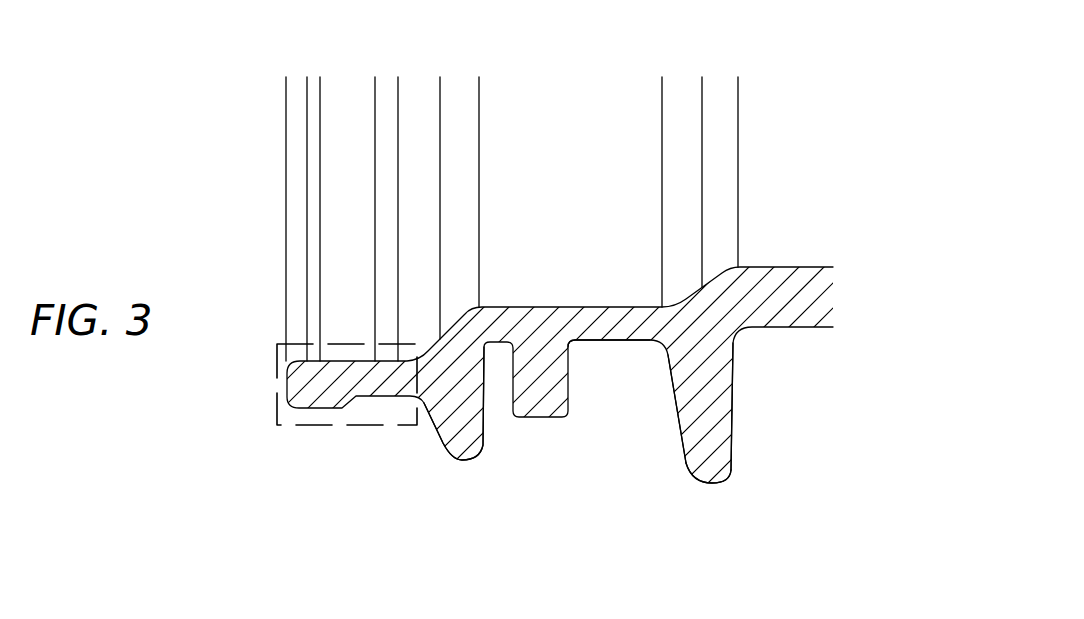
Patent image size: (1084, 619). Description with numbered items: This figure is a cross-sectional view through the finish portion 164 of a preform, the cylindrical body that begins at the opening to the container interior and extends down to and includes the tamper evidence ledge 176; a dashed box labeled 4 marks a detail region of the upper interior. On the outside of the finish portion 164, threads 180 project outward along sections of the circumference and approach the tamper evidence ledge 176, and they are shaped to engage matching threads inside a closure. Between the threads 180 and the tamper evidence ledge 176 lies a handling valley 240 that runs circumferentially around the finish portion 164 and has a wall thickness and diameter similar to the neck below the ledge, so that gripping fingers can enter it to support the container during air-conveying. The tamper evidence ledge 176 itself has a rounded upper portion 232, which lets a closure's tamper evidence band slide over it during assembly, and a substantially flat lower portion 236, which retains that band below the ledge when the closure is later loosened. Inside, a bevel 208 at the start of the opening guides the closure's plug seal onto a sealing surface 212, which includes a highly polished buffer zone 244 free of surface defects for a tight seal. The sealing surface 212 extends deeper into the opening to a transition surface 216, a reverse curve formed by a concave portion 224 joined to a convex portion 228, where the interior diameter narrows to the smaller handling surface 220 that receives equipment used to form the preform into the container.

The detail region of FIG. 4 is at (268, 410).
The finish portion 164 is at (343, 492).
The tamper evidence ledge 176 is at (720, 483).
The threads 180 is at (463, 462).
The bevel 208 is at (293, 107).
The sealing surface 212 is at (313, 288).
The transition surface 216 is at (396, 232).
The handling surface 220 is at (598, 191).
The concave portion 224 is at (417, 85).
The convex portion 228 is at (460, 85).
The rounded upper portion 232 is at (683, 455).
The flat lower portion 236 is at (730, 410).
The handling valley 240 is at (595, 342).
The buffer zone 244 is at (345, 156).